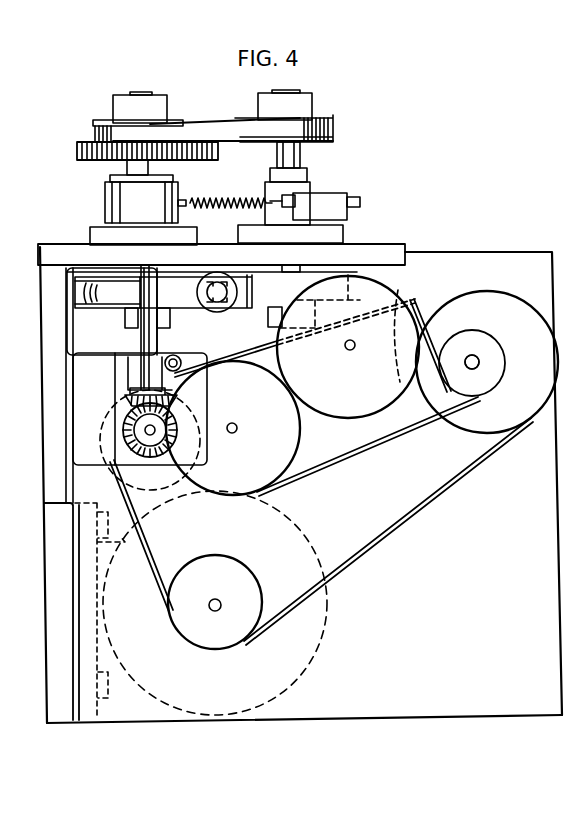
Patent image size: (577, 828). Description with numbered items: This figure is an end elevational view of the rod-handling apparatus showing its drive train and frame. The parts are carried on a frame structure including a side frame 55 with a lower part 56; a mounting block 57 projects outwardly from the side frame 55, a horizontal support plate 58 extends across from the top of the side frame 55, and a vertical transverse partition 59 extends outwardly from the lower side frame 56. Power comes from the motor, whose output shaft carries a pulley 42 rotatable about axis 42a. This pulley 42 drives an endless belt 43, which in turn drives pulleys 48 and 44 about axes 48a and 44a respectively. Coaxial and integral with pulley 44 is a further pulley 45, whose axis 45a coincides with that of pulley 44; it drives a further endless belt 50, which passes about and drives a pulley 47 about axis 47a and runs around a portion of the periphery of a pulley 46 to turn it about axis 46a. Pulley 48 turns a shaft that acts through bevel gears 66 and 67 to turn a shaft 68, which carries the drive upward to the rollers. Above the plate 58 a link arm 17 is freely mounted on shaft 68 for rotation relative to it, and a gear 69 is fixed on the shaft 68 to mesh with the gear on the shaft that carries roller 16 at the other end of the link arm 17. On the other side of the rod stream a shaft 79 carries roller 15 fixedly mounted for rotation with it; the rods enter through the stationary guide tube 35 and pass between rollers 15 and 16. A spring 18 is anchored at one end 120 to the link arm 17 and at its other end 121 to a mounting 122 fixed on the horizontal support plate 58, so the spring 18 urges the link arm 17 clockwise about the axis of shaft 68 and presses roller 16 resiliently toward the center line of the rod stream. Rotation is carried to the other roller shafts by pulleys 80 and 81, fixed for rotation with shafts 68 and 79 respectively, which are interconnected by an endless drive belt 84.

The roller 15 is at (252, 308).
The roller 16 is at (112, 308).
The link arm 17 is at (105, 202).
The spring 18 is at (232, 196).
The stationary guide tube 35 is at (215, 313).
The pulley 42 is at (240, 578).
The axis 42a is at (215, 598).
The endless belt 43 is at (420, 500).
The pulley 44 is at (543, 290).
The axis 44a is at (474, 356).
The pulley 45 is at (492, 365).
The axis 45a is at (494, 338).
The pulley 46 is at (395, 287).
The axis 46a is at (351, 352).
The pulley 47 is at (292, 437).
The axis 47a is at (237, 425).
The pulley 48 is at (118, 480).
The axis 48a is at (150, 452).
The endless belt 50 is at (366, 443).
The side frame 55 is at (46, 289).
The lower part of side frame 56 is at (47, 553).
The mounting block 57 is at (80, 368).
The horizontal support plate 58 is at (378, 243).
The vertical transverse partition 59 is at (470, 717).
The bevel gear 66 is at (128, 440).
The bevel gear 67 is at (125, 401).
The shaft 68 is at (127, 167).
The gear 69 is at (77, 152).
The shaft 79 is at (300, 160).
The pulley 80 is at (118, 116).
The pulley 81 is at (330, 116).
The endless drive belt 84 is at (210, 125).
The spring end 120 is at (188, 205).
The spring end 121 is at (285, 198).
The mounting 122 is at (335, 197).